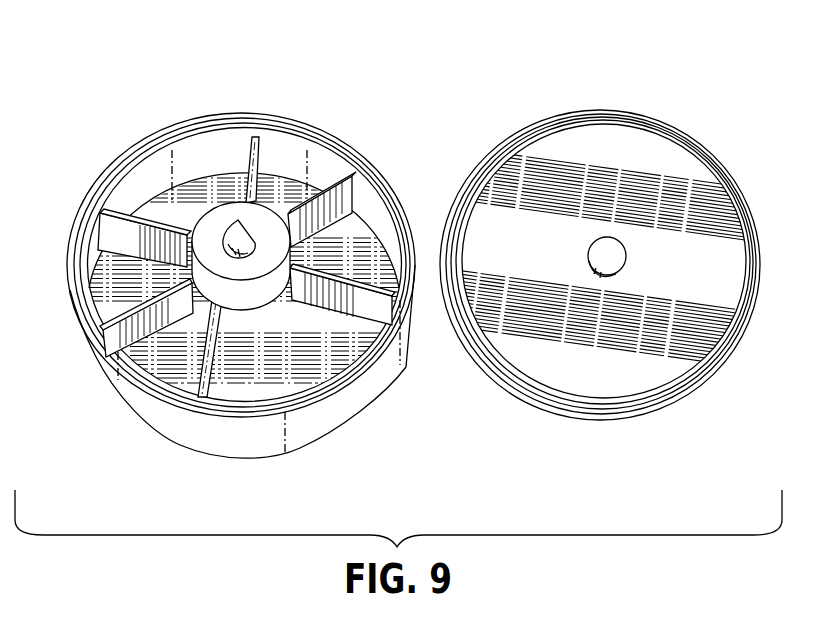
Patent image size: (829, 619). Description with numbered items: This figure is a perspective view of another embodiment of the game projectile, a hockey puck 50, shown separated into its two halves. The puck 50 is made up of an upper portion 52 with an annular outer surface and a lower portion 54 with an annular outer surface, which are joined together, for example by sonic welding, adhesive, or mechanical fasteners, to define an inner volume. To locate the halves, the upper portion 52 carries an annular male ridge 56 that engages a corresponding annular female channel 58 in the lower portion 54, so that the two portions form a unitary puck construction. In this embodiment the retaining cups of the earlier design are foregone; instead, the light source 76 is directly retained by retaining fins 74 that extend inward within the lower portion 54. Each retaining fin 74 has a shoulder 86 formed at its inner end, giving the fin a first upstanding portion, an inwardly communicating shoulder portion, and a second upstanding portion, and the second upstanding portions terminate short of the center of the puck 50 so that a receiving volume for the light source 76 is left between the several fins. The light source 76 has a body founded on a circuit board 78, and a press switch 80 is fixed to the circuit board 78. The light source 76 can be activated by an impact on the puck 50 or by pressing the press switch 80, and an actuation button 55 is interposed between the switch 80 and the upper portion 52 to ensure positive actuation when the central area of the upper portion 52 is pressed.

The hockey puck 50 is at (387, 98).
The upper portion 52 is at (536, 256).
The lower portion 54 is at (252, 434).
The actuation button 55 is at (626, 258).
The annular male ridge 56 is at (568, 118).
The annular female channel 58 is at (78, 229).
The retaining fins 74 is at (150, 218).
The light source 76 is at (197, 202).
The circuit board 78 is at (282, 202).
The press switch 80 is at (252, 252).
The shoulder 86 is at (198, 293).